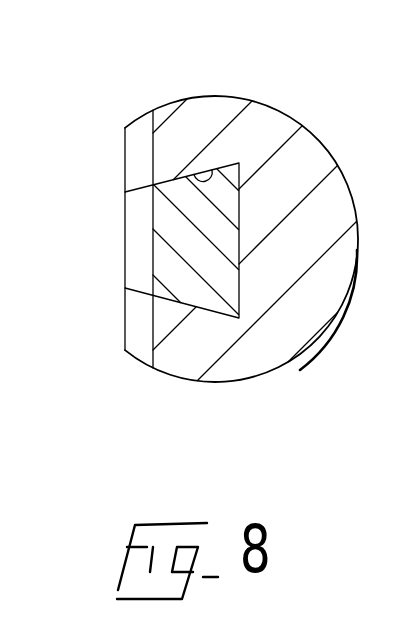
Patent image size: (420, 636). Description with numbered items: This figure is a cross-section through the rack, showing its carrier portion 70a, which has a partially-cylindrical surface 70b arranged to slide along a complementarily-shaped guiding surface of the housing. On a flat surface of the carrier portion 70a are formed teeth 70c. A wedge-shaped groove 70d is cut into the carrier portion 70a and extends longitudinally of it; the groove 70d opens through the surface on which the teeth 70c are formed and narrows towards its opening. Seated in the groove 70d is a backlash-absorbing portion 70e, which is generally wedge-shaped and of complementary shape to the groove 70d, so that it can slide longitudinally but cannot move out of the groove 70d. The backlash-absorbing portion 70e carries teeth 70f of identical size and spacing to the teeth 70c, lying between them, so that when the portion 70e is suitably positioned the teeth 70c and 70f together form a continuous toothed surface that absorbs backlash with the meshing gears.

The carrier portion 70a is at (246, 369).
The partially-cylindrical surface 70b is at (335, 318).
The teeth 70c is at (144, 142).
The wedge-shaped groove 70d is at (216, 165).
The backlash-absorbing portion 70e is at (173, 266).
The teeth 70f is at (148, 213).